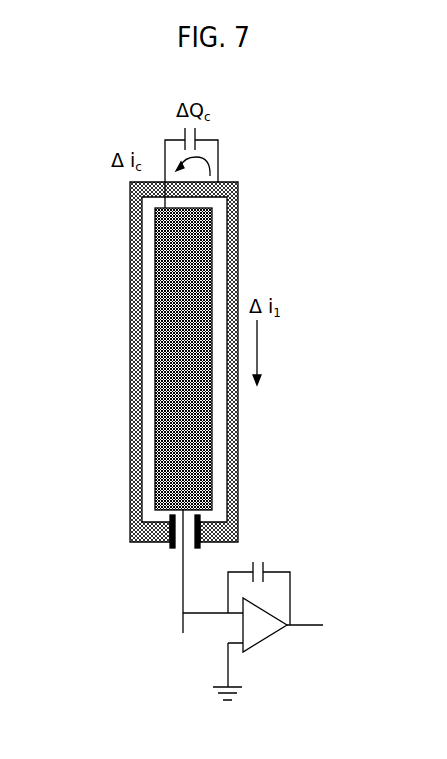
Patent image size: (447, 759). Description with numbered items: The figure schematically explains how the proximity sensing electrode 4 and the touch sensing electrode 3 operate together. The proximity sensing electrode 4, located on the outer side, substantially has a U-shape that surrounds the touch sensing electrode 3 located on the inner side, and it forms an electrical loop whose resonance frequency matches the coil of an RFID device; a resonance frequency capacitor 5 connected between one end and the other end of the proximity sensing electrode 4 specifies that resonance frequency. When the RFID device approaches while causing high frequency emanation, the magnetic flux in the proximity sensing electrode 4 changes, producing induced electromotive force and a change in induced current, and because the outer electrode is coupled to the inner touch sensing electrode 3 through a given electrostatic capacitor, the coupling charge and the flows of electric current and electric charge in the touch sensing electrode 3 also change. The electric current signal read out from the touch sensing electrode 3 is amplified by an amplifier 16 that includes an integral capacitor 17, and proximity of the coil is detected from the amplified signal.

The touch sensing electrode 3 is at (165, 312).
The proximity sensing electrode 4 is at (130, 260).
The resonance frequency capacitor 5 is at (171, 545).
The amplifier 16 is at (264, 641).
The integral capacitor 17 is at (265, 568).